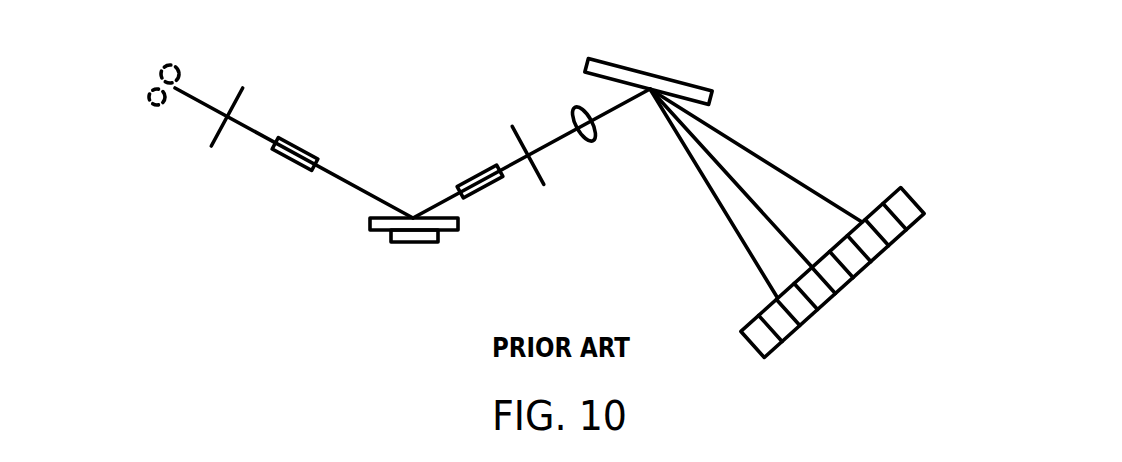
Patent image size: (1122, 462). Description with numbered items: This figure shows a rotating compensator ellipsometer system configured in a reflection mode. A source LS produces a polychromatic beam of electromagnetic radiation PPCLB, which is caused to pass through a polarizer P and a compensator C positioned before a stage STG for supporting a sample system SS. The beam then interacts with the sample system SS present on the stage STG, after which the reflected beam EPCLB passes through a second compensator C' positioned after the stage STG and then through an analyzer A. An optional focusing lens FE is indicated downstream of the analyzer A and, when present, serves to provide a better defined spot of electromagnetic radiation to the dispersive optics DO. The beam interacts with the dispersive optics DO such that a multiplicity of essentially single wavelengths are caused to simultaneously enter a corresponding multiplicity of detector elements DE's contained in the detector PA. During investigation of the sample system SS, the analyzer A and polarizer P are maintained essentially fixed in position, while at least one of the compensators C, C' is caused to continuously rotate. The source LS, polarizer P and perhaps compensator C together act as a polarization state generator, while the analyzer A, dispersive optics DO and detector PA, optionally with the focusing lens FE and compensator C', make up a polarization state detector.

The source of a polychromatic beam of electromagnetic radiation LS is at (149, 83).
The polarizer P is at (237, 102).
The polychromatic beam of electromagnetic radiation PPCLB is at (256, 118).
The compensator C is at (295, 144).
The sample system SS is at (362, 217).
The stage for supporting a sample system STG is at (405, 244).
The compensator C' is at (480, 173).
The analyzer A is at (536, 168).
The elliptically polarized collimated light beam EPCLB is at (548, 134).
The focusing lens FE is at (603, 140).
The dispersive optics DO is at (648, 74).
The detector PA is at (746, 311).
The detector elements DE's is at (843, 330).